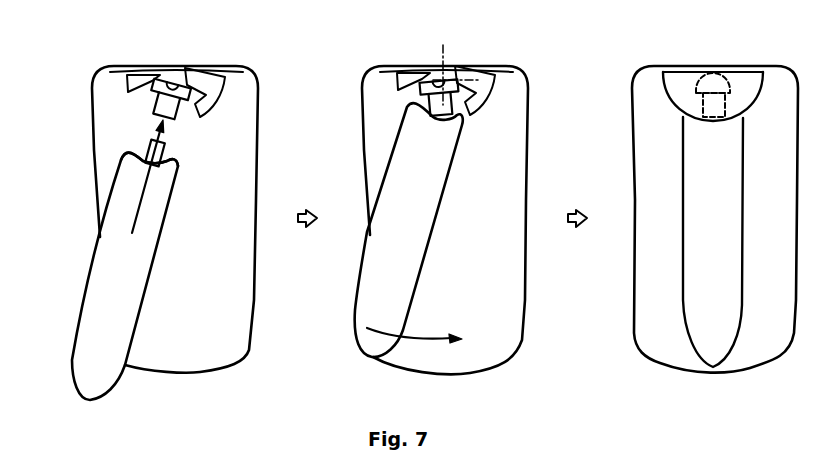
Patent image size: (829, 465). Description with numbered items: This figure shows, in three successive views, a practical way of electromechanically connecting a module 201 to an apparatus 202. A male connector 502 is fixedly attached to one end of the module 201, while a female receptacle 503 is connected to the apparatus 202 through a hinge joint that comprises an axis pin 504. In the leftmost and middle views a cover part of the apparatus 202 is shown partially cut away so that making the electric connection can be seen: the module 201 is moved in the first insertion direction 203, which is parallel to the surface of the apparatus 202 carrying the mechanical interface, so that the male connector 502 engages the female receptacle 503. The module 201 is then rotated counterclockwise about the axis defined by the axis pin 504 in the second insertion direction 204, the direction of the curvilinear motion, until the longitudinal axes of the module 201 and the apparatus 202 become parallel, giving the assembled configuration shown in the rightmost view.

The module 201 is at (72, 392).
The apparatus 202 is at (92, 121).
The first insertion direction 203 is at (147, 172).
The second insertion direction 204 is at (428, 342).
The male connector 502 is at (170, 157).
The female receptacle 503 is at (178, 113).
The axis pin 504 is at (170, 78).